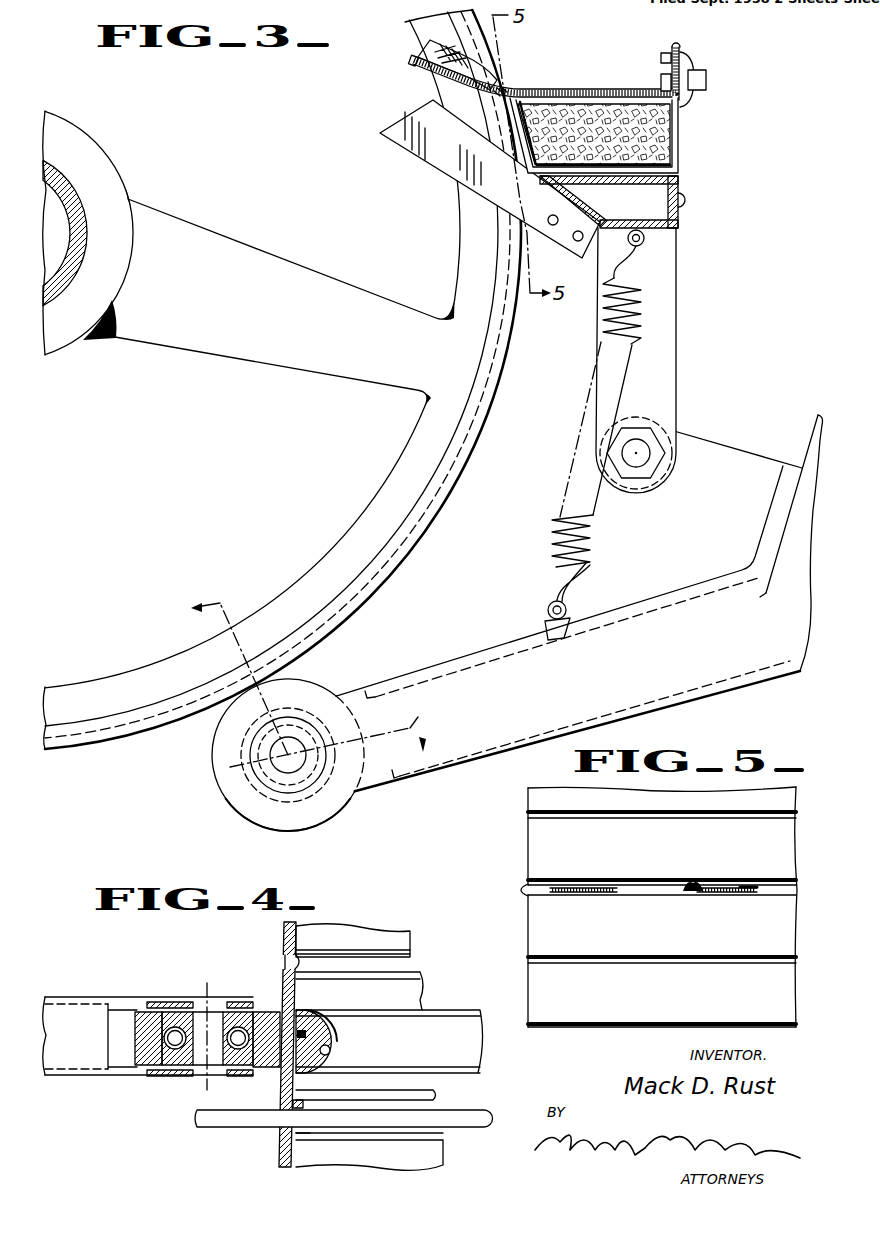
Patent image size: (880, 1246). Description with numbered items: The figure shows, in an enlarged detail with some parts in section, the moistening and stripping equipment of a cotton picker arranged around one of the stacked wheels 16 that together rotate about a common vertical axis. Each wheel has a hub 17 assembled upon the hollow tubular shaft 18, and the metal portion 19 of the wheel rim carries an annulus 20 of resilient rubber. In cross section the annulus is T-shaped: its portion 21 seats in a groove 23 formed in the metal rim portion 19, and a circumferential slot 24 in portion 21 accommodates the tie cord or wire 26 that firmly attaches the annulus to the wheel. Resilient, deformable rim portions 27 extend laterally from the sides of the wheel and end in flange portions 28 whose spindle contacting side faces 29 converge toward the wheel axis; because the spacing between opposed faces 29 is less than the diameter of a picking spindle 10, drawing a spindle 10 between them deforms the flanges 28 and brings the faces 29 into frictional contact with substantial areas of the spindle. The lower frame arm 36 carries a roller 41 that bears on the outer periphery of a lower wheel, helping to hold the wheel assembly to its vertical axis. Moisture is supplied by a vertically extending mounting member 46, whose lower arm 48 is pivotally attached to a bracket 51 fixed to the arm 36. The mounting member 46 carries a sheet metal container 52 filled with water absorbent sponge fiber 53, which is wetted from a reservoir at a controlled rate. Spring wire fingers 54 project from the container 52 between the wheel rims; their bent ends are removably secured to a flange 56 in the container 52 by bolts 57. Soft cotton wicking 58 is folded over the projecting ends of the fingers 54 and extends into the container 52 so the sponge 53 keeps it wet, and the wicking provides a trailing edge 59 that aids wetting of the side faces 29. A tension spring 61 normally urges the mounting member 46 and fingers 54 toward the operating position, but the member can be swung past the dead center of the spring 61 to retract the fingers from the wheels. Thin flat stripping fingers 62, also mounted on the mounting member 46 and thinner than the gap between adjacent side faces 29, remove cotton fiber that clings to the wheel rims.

In FIG. 4, the picking spindle 10 is at (213, 1120).
In FIG. 3, the wheel 16 is at (282, 379).
In FIG. 4, the wheel 16 is at (457, 1010).
In FIG. 5, the wheel 16 is at (642, 918).
In FIG. 3, the hub 17 is at (113, 208).
In FIG. 3, the hollow tubular shaft 18 is at (74, 281).
In FIG. 3, the metal portion of the wheel rim 19 is at (365, 510).
In FIG. 4, the metal portion of the wheel rim 19 is at (338, 1028).
In FIG. 3, the annulus 20 is at (440, 509).
In FIG. 4, the annulus 20 is at (263, 1044).
In FIG. 5, the annulus 20 is at (643, 900).
In FIG. 4, the portion of the annulus 21 is at (320, 1024).
In FIG. 4, the groove 23 is at (330, 1051).
In FIG. 4, the circumferential slot 24 is at (279, 1012).
In FIG. 5, the circumferential slot 24 is at (637, 819).
In FIG. 4, the tie cord or wire 26 is at (302, 1030).
In FIG. 4, the rim portion 27 is at (294, 1107).
In FIG. 5, the rim portion 27 is at (540, 850).
In FIG. 3, the flange portion 28 is at (407, 548).
In FIG. 4, the flange portion 28 is at (308, 1110).
In FIG. 5, the flange portion 28 is at (636, 1026).
In FIG. 3, the spindle contacting side face 29 is at (497, 269).
In FIG. 4, the spindle contacting side face 29 is at (289, 962).
In FIG. 5, the spindle contacting side face 29 is at (527, 890).
In FIG. 3, the arm 36 is at (500, 658).
In FIG. 4, the arm 36 is at (77, 997).
In FIG. 3, the roller 41 is at (304, 692).
In FIG. 4, the roller 41 is at (141, 1012).
In FIG. 3, the mounting member 46 is at (665, 184).
In FIG. 3, the lower arm 48 is at (670, 348).
In FIG. 3, the bracket 51 is at (716, 448).
In FIG. 3, the container 52 is at (621, 133).
In FIG. 3, the sponge fiber 53 is at (655, 136).
In FIG. 3, the finger 54 is at (555, 62).
In FIG. 5, the finger 54 is at (703, 907).
In FIG. 3, the flange 56 is at (675, 46).
In FIG. 3, the bolt 57 is at (700, 72).
In FIG. 3, the cotton wicking 58 is at (500, 86).
In FIG. 5, the cotton wicking 58 is at (688, 893).
In FIG. 3, the trailing edge 59 is at (432, 48).
In FIG. 5, the trailing edge 59 is at (733, 896).
In FIG. 3, the tension spring 61 is at (645, 300).
In FIG. 3, the stripping finger 62 is at (432, 160).
In FIG. 5, the stripping finger 62 is at (600, 897).